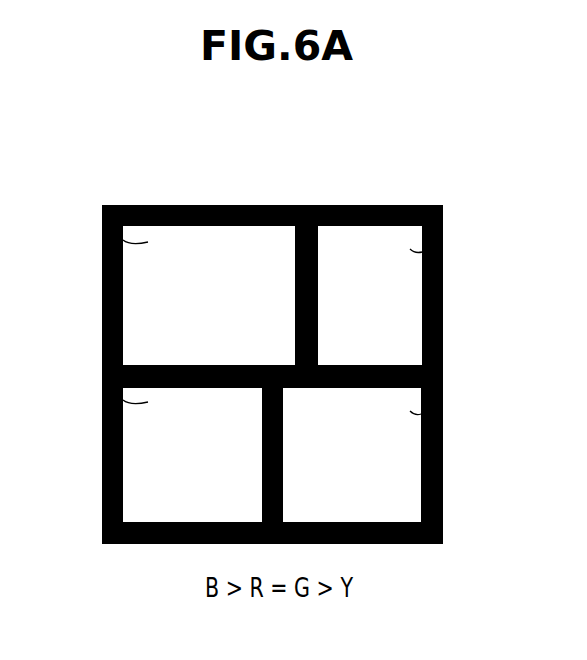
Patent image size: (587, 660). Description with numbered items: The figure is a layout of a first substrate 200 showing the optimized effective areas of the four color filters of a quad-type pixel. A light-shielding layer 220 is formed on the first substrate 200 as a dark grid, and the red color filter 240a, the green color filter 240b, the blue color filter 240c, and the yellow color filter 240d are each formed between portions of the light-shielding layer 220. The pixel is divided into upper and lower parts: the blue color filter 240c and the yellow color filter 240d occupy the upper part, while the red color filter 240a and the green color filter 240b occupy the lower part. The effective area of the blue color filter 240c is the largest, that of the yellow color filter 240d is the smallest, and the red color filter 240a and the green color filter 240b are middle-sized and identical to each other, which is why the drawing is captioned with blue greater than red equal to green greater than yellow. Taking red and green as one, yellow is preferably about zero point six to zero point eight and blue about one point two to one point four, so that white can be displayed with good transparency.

The first substrate 200 is at (282, 328).
The light-shielding layer 220 is at (309, 204).
The red color filter 240a is at (102, 390).
The green color filter 240b is at (443, 410).
The blue color filter 240c is at (102, 230).
The yellow color filter 240d is at (443, 247).